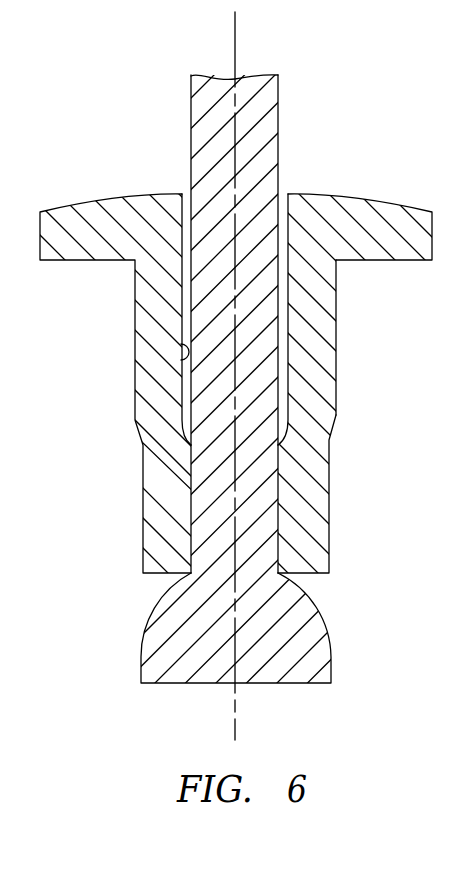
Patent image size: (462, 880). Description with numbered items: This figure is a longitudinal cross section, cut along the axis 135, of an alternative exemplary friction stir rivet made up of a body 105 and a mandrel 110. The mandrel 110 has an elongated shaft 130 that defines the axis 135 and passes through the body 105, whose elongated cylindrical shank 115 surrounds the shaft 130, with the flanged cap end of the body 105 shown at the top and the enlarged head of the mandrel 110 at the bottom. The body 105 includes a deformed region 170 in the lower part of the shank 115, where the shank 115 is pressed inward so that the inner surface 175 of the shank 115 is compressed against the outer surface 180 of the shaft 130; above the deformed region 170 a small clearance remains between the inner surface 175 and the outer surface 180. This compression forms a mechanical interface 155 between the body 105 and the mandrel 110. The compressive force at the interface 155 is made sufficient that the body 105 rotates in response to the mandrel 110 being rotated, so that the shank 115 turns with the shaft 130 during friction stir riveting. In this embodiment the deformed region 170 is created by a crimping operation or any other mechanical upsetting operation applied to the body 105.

The body 105 is at (231, 440).
The mandrel 110 is at (231, 440).
The shank 115 is at (337, 362).
The shaft 130 is at (279, 152).
The axis 135 is at (235, 31).
The mechanical interface 155 is at (190, 512).
The deformed region 170 is at (330, 530).
The inner surface 175 is at (181, 344).
The outer surface 180 is at (192, 388).